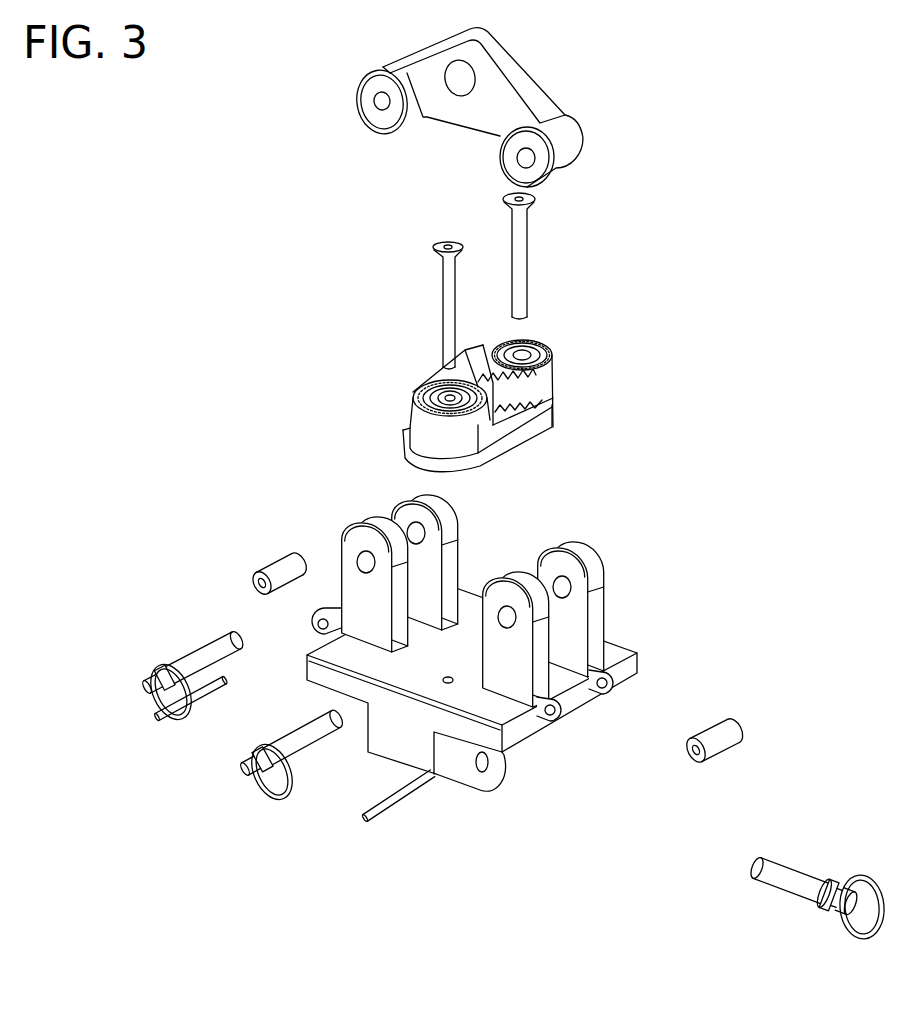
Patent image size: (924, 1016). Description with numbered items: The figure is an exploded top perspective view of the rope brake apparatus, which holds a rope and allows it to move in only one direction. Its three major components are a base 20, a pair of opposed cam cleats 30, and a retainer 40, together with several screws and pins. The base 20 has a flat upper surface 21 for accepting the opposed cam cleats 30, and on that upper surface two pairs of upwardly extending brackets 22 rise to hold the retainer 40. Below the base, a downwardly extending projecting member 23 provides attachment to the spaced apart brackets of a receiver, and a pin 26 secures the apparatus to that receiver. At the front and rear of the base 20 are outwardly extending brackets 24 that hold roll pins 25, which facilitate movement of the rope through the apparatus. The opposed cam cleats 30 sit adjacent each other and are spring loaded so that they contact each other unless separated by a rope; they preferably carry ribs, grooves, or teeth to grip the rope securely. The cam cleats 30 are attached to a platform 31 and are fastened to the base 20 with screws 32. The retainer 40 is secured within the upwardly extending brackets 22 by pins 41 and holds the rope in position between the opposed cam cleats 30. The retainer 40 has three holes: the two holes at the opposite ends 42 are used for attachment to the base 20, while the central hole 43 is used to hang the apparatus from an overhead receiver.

The base 20 is at (280, 491).
The flat upper surface 21 is at (453, 668).
The upwardly extending brackets 22 is at (597, 563).
The downwardly extending projecting member 23 is at (505, 768).
The outwardly extending brackets 24 is at (633, 690).
The roll pins 25 is at (730, 748).
The pin 26 is at (757, 878).
The opposed cam cleats 30 is at (413, 400).
The platform 31 is at (540, 437).
The screws 32 is at (528, 258).
The retainer 40 is at (630, 125).
The pins 41 is at (192, 652).
The holes at the opposite ends 42 is at (374, 105).
The central hole 43 is at (476, 75).